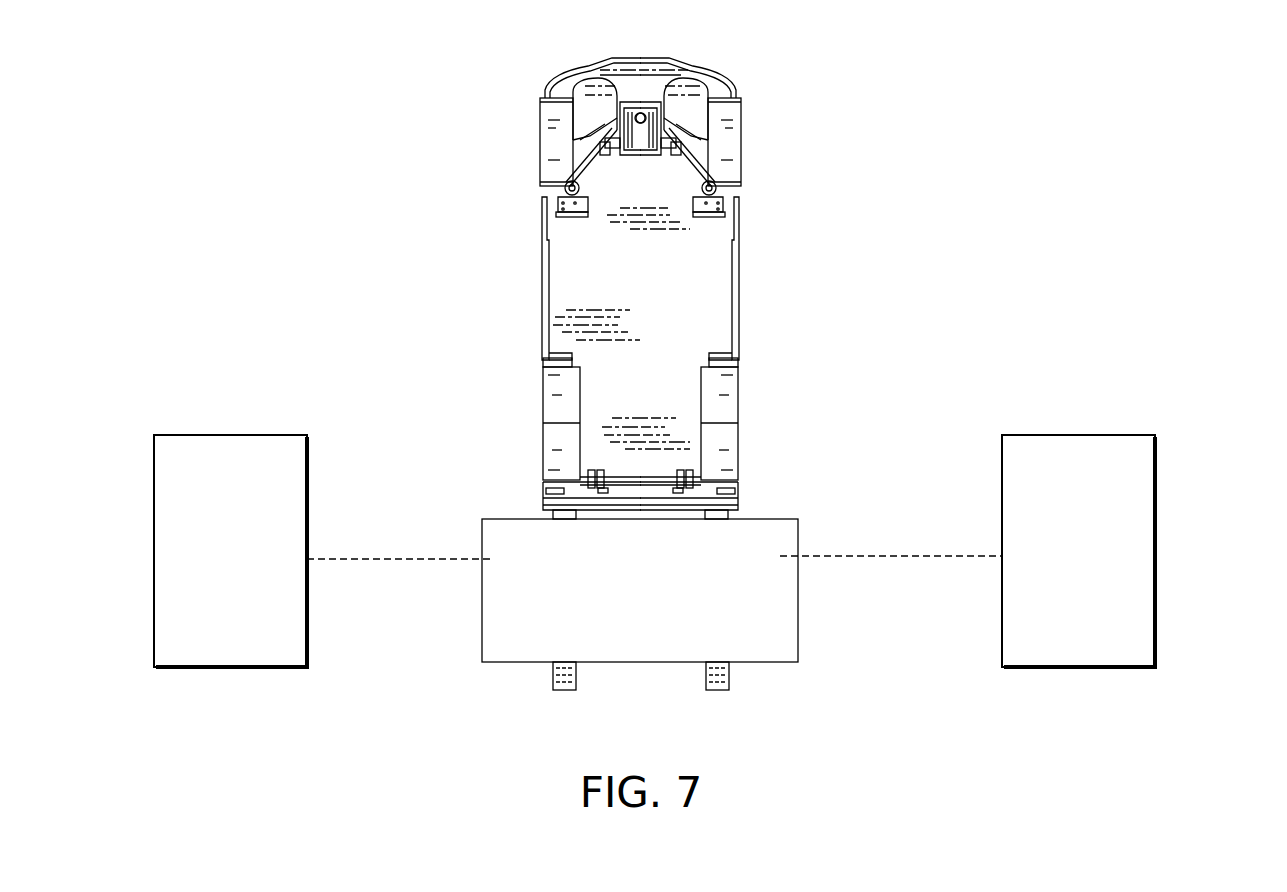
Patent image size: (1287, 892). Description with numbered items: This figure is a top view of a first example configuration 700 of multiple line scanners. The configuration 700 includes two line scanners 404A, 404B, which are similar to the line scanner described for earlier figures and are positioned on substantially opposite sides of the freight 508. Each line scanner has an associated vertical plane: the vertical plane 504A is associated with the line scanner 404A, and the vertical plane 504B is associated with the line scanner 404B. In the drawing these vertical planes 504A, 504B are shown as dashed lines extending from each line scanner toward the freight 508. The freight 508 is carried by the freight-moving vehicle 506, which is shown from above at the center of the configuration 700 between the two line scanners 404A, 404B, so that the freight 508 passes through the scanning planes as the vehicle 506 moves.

The configuration 700 is at (1163, 109).
The freight-moving vehicle 506 is at (741, 277).
The freight 508 is at (777, 519).
The vertical plane 504A is at (415, 558).
The vertical plane 504B is at (891, 555).
The line scanner 404A is at (154, 552).
The line scanner 404B is at (1155, 552).